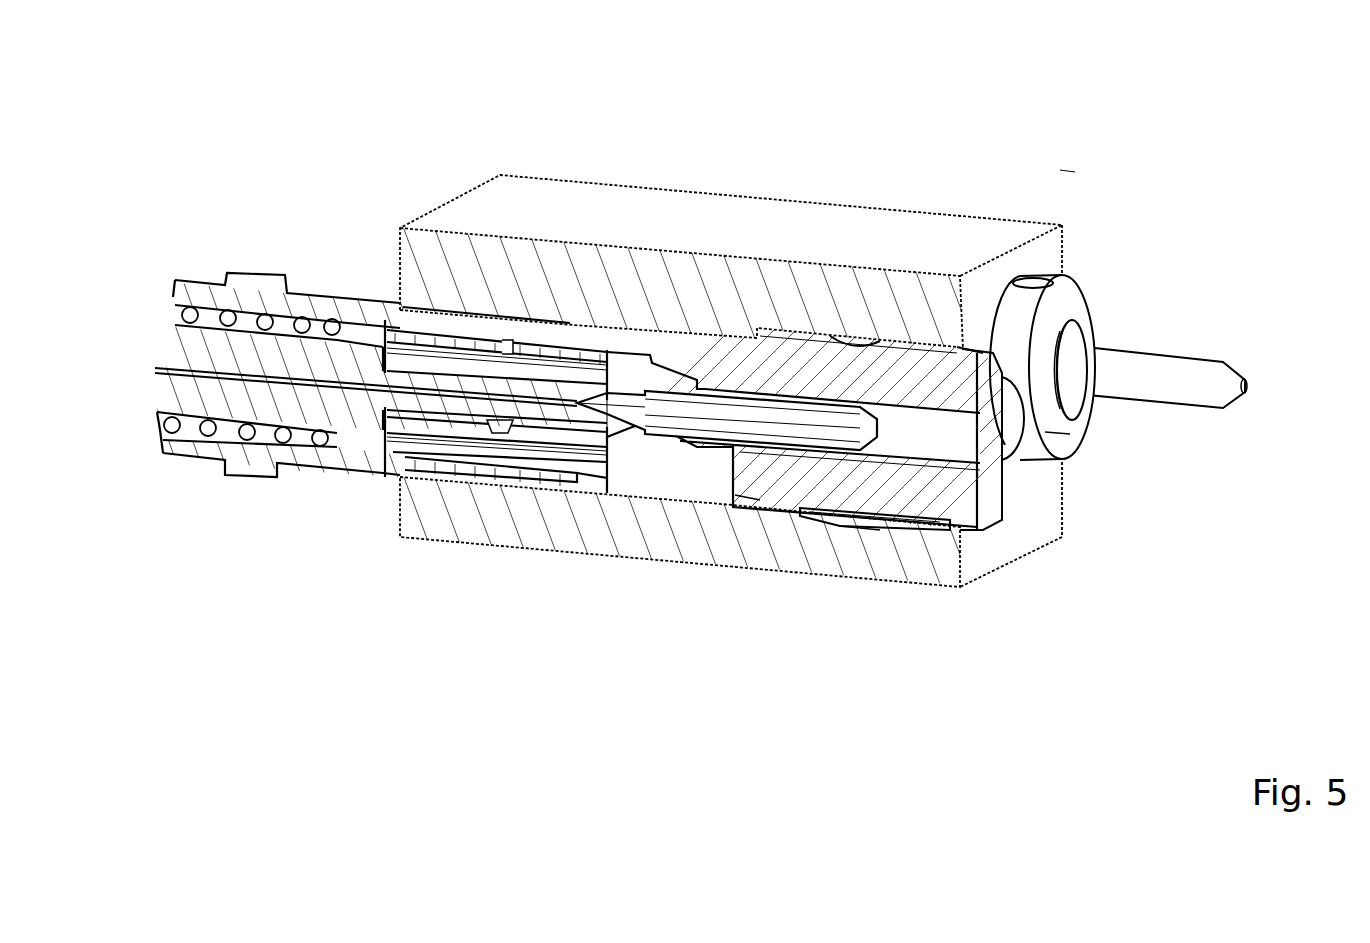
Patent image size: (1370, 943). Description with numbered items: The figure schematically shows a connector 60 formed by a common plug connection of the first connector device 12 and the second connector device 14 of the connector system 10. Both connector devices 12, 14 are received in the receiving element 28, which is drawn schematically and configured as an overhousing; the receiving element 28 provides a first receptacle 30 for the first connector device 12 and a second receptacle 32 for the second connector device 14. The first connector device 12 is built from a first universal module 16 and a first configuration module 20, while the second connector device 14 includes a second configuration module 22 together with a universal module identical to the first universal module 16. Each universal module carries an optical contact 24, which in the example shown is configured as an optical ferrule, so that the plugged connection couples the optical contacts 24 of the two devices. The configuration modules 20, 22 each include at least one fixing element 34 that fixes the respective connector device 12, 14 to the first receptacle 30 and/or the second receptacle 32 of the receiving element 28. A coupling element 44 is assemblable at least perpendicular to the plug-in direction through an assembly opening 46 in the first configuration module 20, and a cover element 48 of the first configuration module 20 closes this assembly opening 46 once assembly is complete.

The connector system 10 is at (1070, 165).
The first connector device 12 is at (1004, 456).
The second connector device 14 is at (1070, 434).
The first universal module 16 is at (630, 437).
The first configuration module 20 is at (790, 367).
The second configuration module 22 is at (1048, 343).
The optical contact 24 is at (760, 505).
The receiving element 28 is at (913, 302).
The first receptacle 30 is at (975, 338).
The second receptacle 32 is at (1036, 272).
The fixing element 34 is at (873, 525).
The coupling element 44 is at (900, 440).
The assembly opening 46 is at (727, 488).
The cover element 48 is at (910, 492).
The connector 60 is at (692, 158).